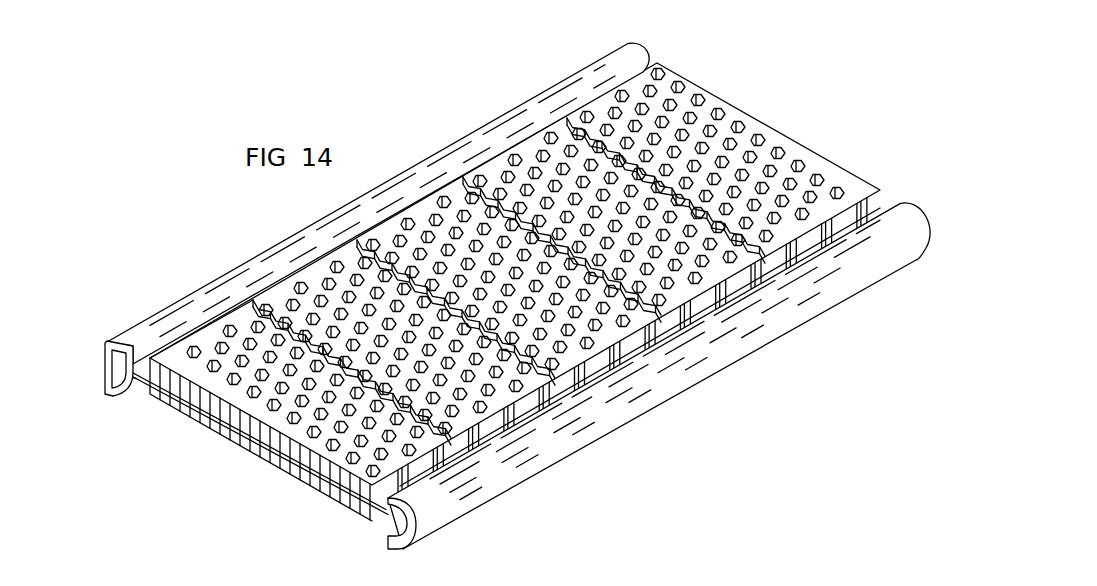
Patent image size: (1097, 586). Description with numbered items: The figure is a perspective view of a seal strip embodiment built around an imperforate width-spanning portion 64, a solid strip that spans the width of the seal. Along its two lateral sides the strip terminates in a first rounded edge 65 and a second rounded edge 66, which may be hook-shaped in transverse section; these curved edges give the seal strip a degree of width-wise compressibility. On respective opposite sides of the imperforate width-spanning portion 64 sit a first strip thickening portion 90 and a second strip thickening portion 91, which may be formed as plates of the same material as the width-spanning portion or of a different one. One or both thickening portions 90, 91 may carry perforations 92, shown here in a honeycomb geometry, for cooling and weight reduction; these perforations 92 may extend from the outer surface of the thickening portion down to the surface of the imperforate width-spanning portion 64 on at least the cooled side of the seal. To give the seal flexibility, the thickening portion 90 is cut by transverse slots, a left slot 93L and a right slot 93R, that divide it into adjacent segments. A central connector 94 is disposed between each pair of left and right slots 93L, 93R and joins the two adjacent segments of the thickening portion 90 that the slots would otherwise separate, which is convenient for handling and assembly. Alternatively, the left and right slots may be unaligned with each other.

The first strip thickening portion 90 is at (515, 292).
The second strip thickening portion 91 is at (196, 432).
The perforations 92 is at (233, 312).
The left transverse slot 93L is at (257, 306).
The right transverse slot 93R is at (450, 417).
The central connector 94 is at (359, 362).
The imperforate width-spanning portion 64 is at (283, 464).
The first rounded edge 65 is at (173, 306).
The second rounded edge 66 is at (486, 497).